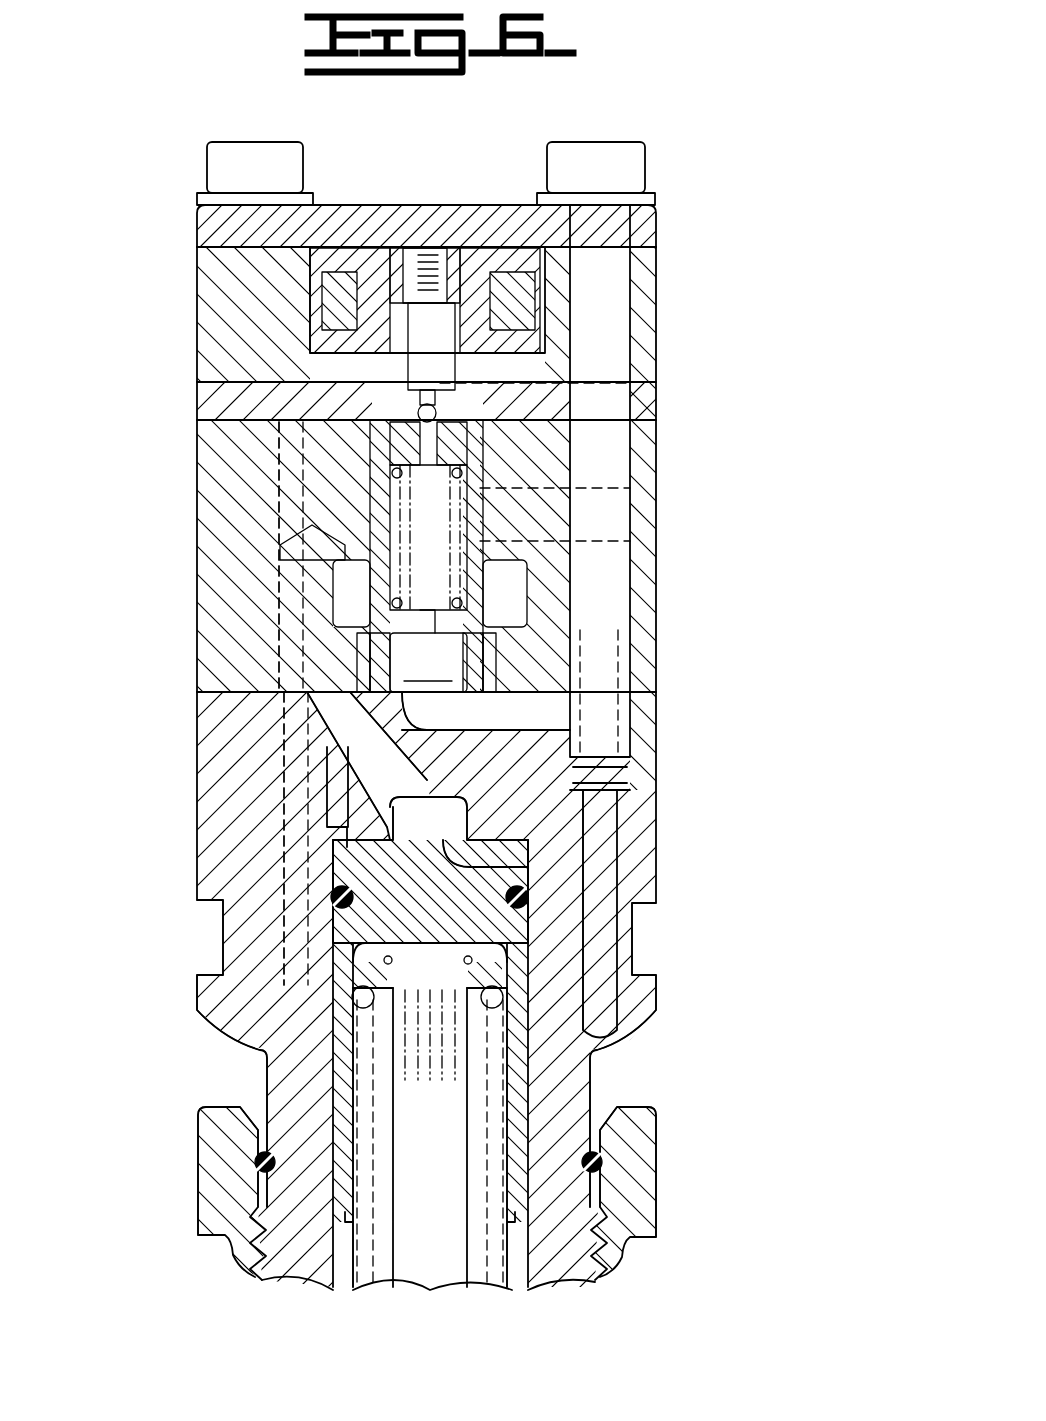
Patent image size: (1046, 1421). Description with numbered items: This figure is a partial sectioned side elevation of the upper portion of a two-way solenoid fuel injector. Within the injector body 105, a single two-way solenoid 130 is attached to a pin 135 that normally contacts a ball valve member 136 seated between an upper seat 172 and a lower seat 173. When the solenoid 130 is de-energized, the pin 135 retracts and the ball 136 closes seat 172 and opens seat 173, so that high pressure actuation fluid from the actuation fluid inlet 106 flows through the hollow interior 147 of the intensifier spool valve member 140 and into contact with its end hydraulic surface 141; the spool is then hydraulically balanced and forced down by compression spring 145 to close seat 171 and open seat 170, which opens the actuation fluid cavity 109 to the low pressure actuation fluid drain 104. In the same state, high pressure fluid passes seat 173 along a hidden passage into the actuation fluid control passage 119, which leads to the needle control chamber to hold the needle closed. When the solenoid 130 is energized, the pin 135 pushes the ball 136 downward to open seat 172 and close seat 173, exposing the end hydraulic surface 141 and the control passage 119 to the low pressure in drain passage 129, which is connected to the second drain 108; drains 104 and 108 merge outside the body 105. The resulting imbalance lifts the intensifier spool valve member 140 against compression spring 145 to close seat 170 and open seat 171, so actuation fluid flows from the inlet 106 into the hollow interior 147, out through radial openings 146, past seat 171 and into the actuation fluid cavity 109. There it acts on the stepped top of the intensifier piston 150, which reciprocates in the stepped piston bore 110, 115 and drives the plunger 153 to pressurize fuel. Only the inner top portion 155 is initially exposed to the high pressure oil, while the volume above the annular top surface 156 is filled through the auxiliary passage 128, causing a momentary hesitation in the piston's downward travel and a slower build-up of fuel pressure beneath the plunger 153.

The actuation fluid drain 104 is at (620, 515).
The injector body 105 is at (262, 1060).
The actuation fluid inlet 106 is at (593, 1053).
The second drain 108 is at (440, 383).
The actuation fluid cavity 109 is at (300, 700).
The stepped piston bore 110 is at (565, 1185).
The stepped piston bore 115 is at (535, 860).
The actuation fluid control passage 119 is at (279, 432).
The auxiliary passage 128 is at (355, 775).
The drain passage 129 is at (400, 380).
The two-way solenoid 130 is at (545, 300).
The pin 135 is at (430, 396).
The ball valve member 136 is at (418, 396).
The intensifier spool valve member 140 is at (355, 580).
The end hydraulic surface 141 is at (440, 410).
The compression spring 145 is at (410, 540).
The radial openings 146 is at (370, 650).
The hollow interior 147 is at (428, 662).
The intensifier piston 150 is at (450, 860).
The plunger 153 is at (475, 1250).
The inner top portion 155 is at (420, 797).
The annular top surface 156 is at (387, 835).
The seat 170 is at (330, 548).
The seat 171 is at (368, 612).
The seat 172 is at (410, 400).
The seat 173 is at (390, 455).